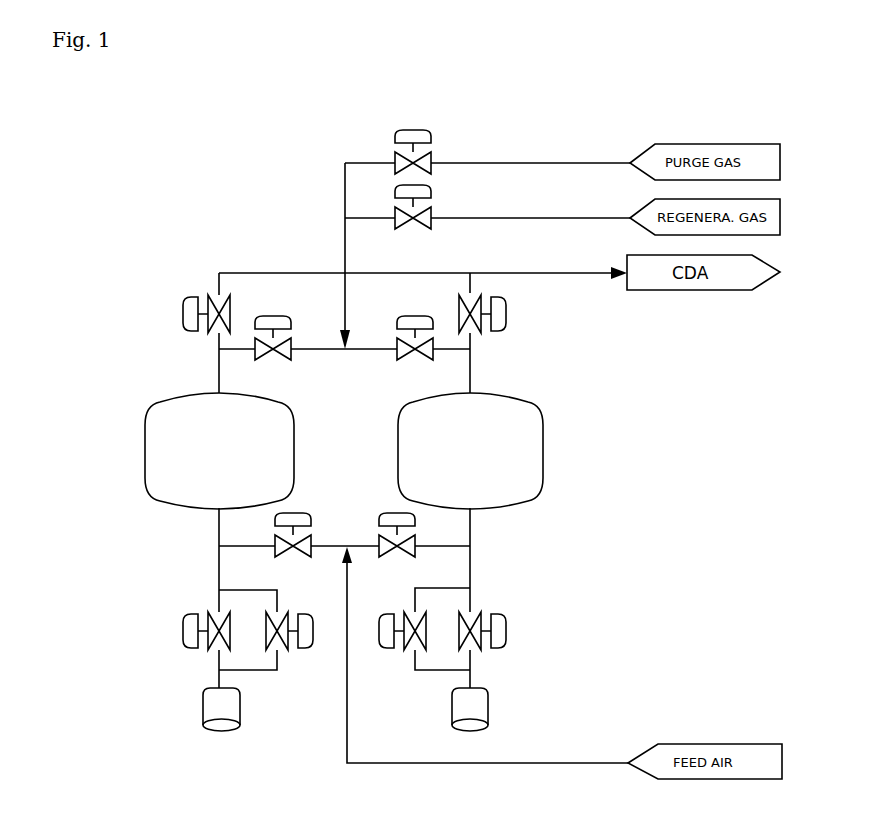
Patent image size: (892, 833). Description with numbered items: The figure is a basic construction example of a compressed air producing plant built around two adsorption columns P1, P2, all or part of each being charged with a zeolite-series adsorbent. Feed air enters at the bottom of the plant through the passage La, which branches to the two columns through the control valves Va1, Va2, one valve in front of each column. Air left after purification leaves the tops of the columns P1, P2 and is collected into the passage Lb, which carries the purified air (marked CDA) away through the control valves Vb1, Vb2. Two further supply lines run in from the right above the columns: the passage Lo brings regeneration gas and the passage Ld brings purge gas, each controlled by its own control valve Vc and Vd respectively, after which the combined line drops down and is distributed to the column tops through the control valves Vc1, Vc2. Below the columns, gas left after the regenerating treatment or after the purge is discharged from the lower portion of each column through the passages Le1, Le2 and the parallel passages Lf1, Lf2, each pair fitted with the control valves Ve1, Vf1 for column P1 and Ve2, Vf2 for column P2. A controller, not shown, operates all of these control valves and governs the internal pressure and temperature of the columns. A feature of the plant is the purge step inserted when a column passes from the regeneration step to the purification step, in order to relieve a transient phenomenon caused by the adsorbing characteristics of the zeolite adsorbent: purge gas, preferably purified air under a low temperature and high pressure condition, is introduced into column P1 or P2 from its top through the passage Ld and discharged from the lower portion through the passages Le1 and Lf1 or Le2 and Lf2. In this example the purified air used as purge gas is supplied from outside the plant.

The control valve Vd is at (425, 154).
The control valve Vc is at (425, 209).
The passage Ld is at (487, 151).
The passage Lo is at (487, 206).
The passage Lb is at (423, 272).
The control valve Vb1 is at (212, 334).
The control valve Vb2 is at (478, 332).
The control valve Vc1 is at (295, 358).
The control valve Vc2 is at (393, 360).
The adsorption column P1 is at (219, 451).
The adsorption column P2 is at (470, 451).
The passage Le1 is at (200, 560).
The passage Le2 is at (488, 560).
The control valve Va1 is at (277, 560).
The control valve Va2 is at (380, 558).
The control valve Ve1 is at (212, 647).
The control valve Vf1 is at (285, 648).
The control valve Vf2 is at (410, 648).
The control valve Ve2 is at (482, 647).
The passage Lf1 is at (248, 671).
The passage Lf2 is at (442, 670).
The passage La is at (485, 655).